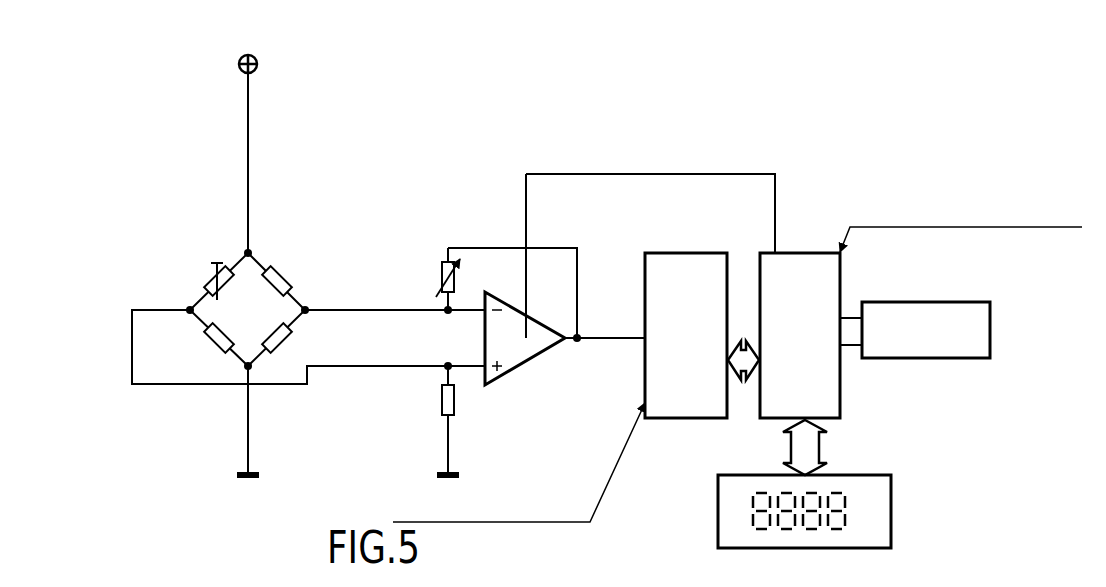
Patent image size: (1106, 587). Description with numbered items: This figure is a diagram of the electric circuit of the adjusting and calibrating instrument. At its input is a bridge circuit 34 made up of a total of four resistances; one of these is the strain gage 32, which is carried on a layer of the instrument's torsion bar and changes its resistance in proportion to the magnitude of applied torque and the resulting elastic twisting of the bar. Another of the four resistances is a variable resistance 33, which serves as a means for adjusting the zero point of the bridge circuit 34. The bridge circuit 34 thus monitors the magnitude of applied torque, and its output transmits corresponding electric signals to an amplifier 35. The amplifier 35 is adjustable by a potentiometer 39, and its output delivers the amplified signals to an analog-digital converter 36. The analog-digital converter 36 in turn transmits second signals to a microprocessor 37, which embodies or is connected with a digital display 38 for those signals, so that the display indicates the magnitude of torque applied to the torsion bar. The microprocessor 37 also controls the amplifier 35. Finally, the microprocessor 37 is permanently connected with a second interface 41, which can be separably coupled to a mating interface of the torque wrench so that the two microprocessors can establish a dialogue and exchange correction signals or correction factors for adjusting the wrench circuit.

The strain gage 32 is at (217, 348).
The variable resistance 33 is at (210, 284).
The bridge circuit 34 is at (246, 302).
The amplifier 35 is at (526, 340).
The analog-digital converter 36 is at (690, 276).
The microprocessor 37 is at (804, 280).
The digital display 38 is at (733, 508).
The potentiometer 39 is at (440, 262).
The second interface 41 is at (936, 338).